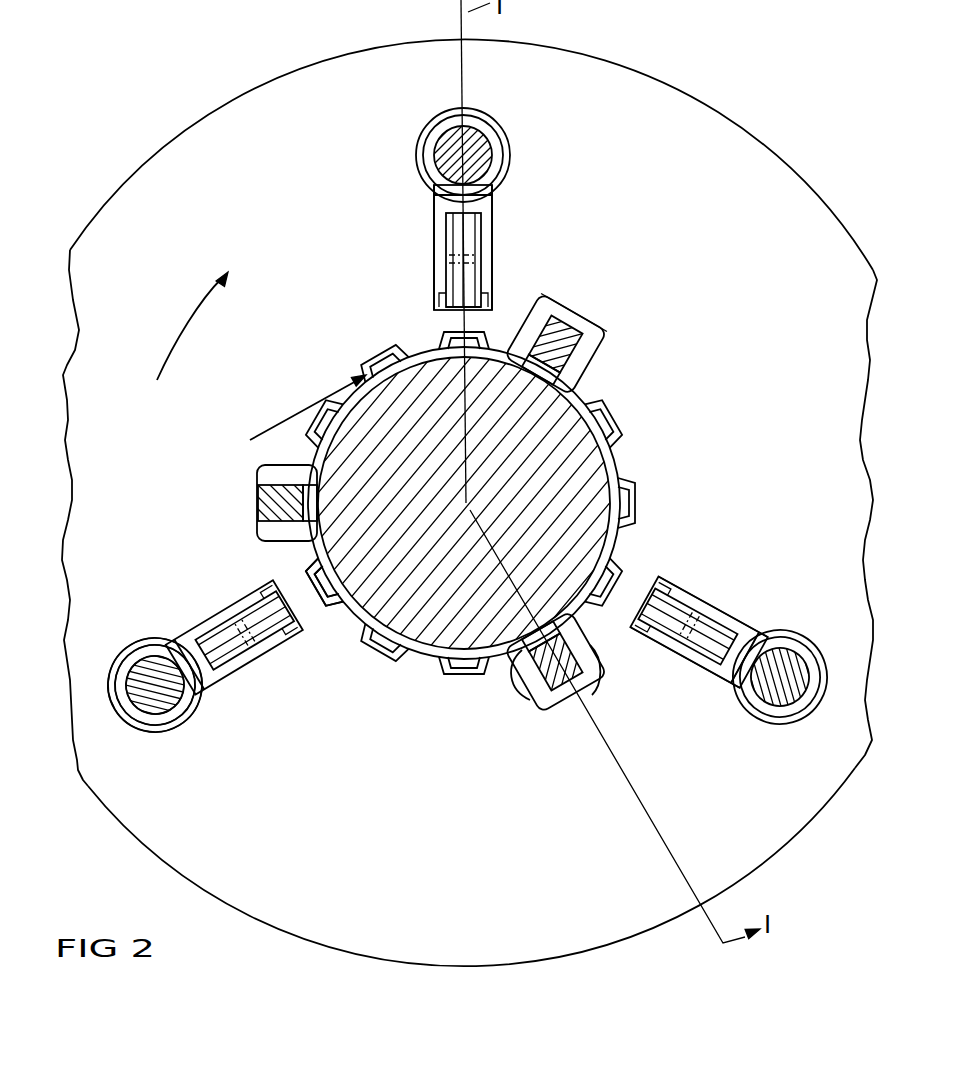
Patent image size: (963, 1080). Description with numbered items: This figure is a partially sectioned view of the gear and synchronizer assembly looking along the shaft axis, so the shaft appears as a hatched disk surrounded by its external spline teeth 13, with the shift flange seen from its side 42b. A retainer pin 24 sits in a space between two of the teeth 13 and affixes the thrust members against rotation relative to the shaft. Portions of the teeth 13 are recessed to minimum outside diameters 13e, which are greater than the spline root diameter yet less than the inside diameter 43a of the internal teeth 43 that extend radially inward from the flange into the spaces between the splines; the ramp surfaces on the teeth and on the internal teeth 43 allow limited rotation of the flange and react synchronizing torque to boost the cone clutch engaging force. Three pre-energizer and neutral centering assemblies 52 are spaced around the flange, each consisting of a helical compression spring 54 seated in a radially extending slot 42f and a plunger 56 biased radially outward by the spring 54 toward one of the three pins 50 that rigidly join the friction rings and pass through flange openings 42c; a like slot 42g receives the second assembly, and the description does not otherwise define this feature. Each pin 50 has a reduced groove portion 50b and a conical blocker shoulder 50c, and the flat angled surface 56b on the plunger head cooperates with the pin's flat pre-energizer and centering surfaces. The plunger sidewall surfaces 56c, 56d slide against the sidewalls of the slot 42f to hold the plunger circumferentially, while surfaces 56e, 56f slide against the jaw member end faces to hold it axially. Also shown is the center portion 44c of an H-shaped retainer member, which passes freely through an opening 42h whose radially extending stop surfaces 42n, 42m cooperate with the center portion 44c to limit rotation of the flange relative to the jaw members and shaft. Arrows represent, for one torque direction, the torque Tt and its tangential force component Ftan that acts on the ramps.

The spline teeth 13 is at (362, 350).
The minimum outside diameter 13e is at (278, 538).
The retainer pin 24 is at (276, 452).
The flange side 42b is at (758, 293).
The flange opening 42c is at (158, 690).
The slot 42f is at (490, 300).
The cylinder 42g is at (300, 628).
The opening 42h is at (560, 322).
The stop surface 42m is at (563, 668).
The stop surface 42n is at (525, 695).
The internal teeth 43 is at (630, 455).
The inside diameter 43a is at (622, 532).
The center portion 44c is at (567, 352).
The pin 50 is at (130, 638).
The reduced diameter or groove portion 50b is at (162, 660).
The conical blocker shoulder 50c is at (198, 707).
The pre-energizer and neutral centering assembly 52 is at (412, 260).
The spring 54 is at (446, 299).
The plunger 56 is at (515, 234).
The flat angled surface 56b is at (738, 700).
The plunger sidewall surface 56c is at (710, 592).
The plunger sidewall surface 56d is at (655, 640).
The plunger sidewall surface 56e is at (705, 680).
The plunger sidewall surface 56f is at (735, 640).
The torque Tt is at (175, 336).
The tangential force Ftan is at (282, 430).